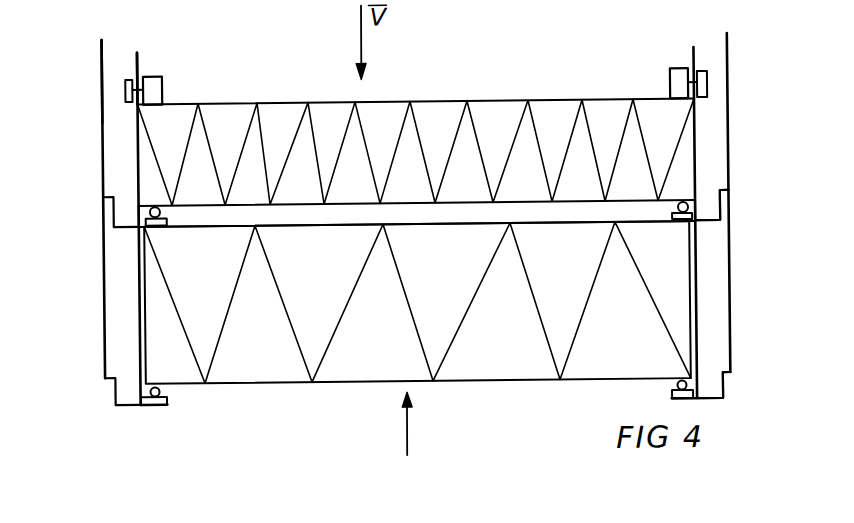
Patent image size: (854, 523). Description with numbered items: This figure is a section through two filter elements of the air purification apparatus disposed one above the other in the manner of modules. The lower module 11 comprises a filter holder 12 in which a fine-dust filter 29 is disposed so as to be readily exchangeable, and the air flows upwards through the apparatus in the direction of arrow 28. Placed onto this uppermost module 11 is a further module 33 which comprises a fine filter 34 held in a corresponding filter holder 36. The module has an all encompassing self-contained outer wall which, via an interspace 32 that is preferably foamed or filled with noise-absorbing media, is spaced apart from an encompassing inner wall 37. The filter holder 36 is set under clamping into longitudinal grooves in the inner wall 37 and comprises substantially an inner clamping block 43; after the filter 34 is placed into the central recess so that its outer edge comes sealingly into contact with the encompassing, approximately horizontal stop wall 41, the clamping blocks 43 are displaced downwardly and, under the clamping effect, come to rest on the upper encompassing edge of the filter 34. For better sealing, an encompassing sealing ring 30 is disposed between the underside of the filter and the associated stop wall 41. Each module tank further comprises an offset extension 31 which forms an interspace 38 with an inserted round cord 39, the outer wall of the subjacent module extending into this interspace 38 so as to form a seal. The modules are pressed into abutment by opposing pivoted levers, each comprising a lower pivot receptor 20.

The module 11 is at (110, 300).
The filter holder 12 is at (136, 335).
The lower pivot receptor 20 is at (150, 400).
The arrow 28 is at (406, 432).
The fine-dust filter 29 is at (271, 354).
The sealing ring 30 is at (161, 211).
The offset extension 31 is at (158, 225).
The interspace 32 is at (739, 131).
The module 33 is at (93, 140).
The filter 34 is at (441, 128).
The filter holder 36 is at (155, 89).
The inner wall 37 is at (142, 59).
The interspace 38 is at (736, 195).
The round cord 39 is at (756, 280).
The stop wall 41 is at (673, 230).
The clamping block 43 is at (677, 88).